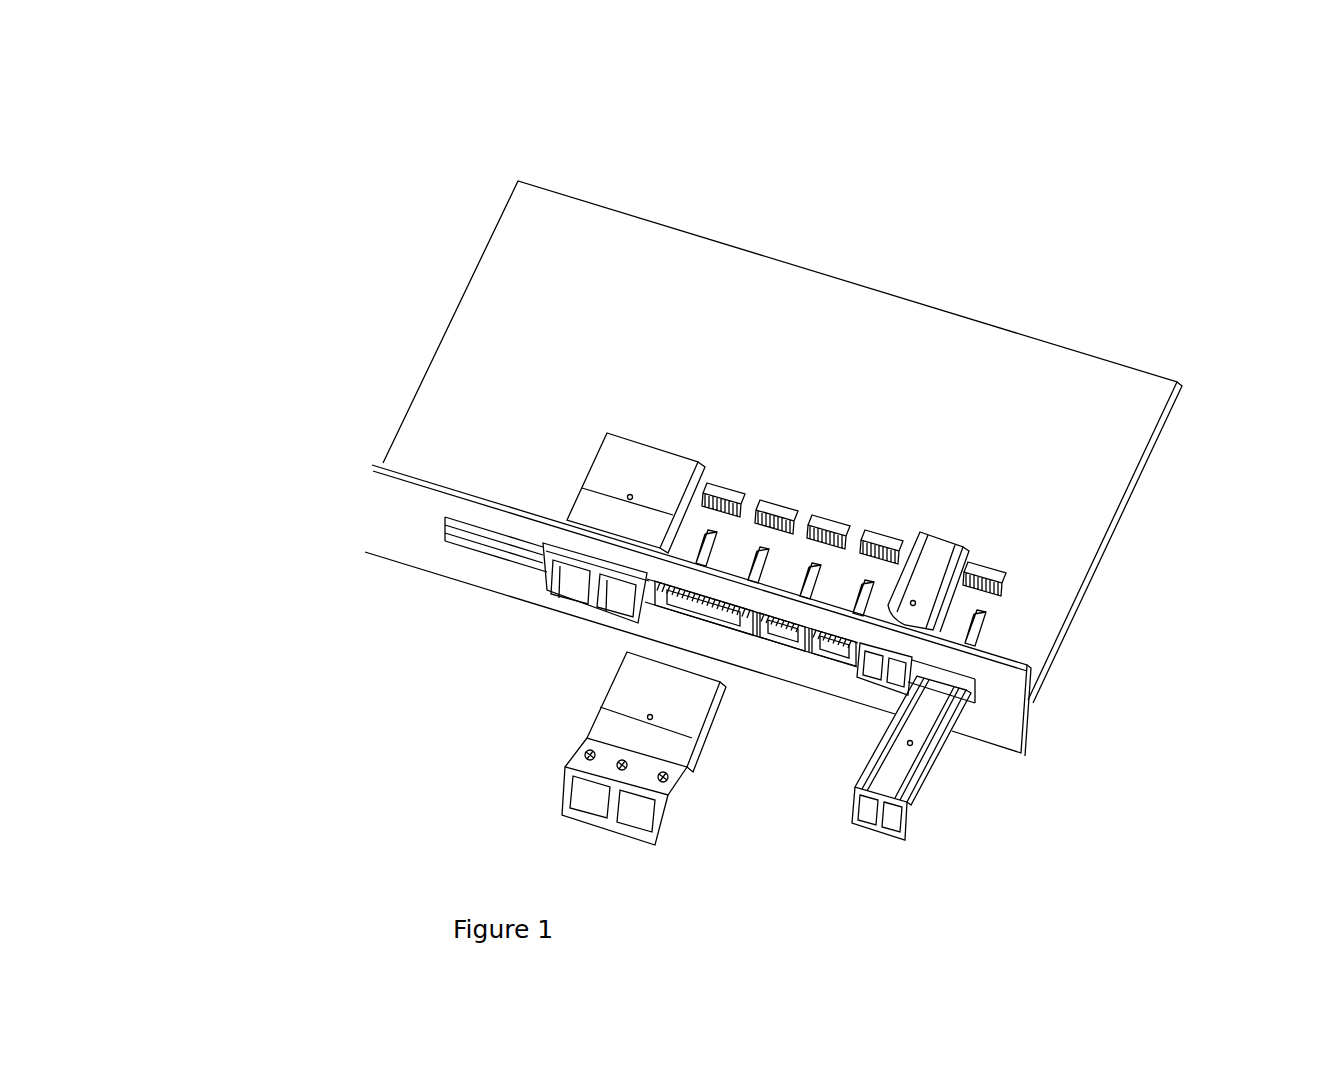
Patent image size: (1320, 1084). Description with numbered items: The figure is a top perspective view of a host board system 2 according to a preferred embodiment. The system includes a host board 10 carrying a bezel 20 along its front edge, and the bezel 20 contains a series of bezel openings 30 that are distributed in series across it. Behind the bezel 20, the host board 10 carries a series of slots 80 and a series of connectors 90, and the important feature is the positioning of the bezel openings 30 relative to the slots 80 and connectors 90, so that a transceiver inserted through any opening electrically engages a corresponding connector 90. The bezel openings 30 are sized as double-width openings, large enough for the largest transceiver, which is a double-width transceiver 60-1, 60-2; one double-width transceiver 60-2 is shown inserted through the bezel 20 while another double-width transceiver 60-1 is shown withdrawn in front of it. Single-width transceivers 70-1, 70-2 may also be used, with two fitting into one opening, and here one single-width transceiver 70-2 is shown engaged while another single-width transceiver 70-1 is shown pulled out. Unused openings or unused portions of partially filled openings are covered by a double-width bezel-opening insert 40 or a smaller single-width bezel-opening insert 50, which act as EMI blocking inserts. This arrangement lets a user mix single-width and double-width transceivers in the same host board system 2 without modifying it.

The host board system 2 is at (318, 134).
The host board 10 is at (527, 325).
The bezel 20 is at (1030, 710).
The bezel opening 30 is at (497, 555).
The bezel-opening insert 40 is at (668, 610).
The bezel-opening insert 50 is at (808, 632).
The double-width transceiver 60-1 is at (577, 757).
The double-width transceiver 60-2 is at (552, 597).
The single-width transceiver 70-1 is at (925, 803).
The single-width transceiver 70-2 is at (953, 535).
The slot 80 is at (975, 623).
The connector 90 is at (998, 565).